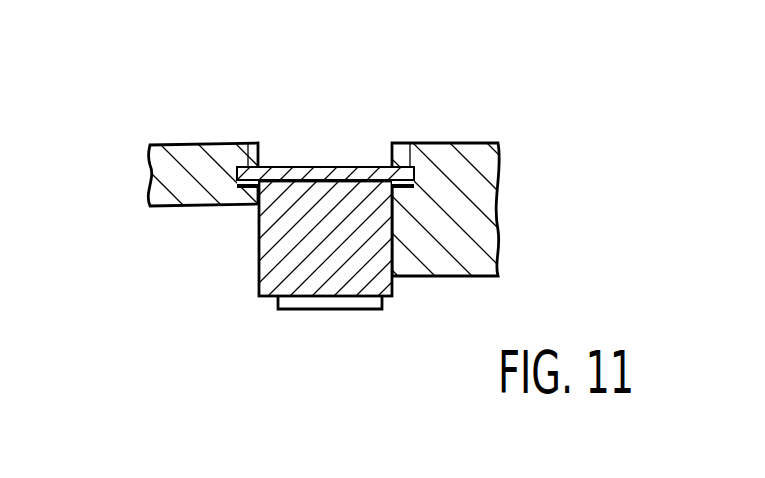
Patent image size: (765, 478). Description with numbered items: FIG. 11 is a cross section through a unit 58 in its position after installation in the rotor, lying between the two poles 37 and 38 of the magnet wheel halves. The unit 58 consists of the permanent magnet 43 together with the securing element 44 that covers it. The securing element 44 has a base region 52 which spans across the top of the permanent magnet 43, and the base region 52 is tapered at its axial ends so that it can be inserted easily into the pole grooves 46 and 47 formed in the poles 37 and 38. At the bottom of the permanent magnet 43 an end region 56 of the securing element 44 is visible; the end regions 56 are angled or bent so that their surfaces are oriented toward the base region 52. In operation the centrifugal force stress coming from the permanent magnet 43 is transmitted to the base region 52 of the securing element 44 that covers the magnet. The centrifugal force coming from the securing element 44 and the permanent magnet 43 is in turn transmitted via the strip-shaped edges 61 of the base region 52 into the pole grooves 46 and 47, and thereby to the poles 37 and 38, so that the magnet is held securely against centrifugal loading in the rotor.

The pole 37 is at (484, 152).
The pole 38 is at (173, 150).
The permanent magnet 43 is at (284, 251).
The securing element 44 is at (313, 167).
The pole groove 46 is at (415, 178).
The pole groove 47 is at (240, 181).
The base region 52 is at (353, 167).
The end region 56 is at (313, 302).
The unit 58 is at (377, 310).
The strip-shaped edges 61 is at (247, 147).